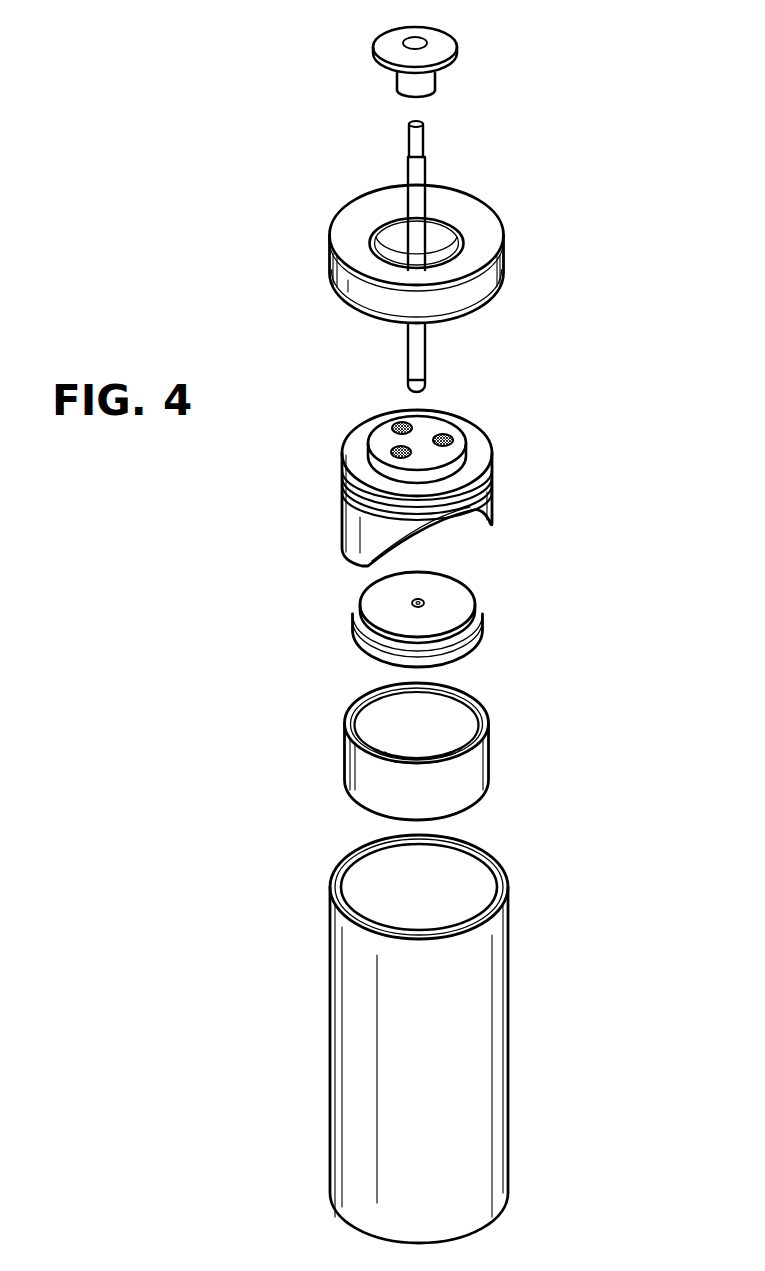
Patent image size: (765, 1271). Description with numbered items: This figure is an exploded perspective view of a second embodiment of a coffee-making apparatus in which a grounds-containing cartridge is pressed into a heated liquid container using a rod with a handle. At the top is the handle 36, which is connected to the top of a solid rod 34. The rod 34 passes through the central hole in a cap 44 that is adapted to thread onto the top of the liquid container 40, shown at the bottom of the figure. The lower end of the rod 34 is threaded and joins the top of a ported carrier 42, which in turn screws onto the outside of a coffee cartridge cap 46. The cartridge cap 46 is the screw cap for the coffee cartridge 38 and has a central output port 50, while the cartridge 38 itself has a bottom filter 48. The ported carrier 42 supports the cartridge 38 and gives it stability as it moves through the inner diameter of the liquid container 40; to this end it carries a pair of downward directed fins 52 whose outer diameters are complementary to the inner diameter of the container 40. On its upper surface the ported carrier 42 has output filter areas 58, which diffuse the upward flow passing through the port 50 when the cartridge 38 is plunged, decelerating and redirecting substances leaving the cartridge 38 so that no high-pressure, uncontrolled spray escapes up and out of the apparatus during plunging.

The solid rod 34 is at (425, 163).
The handle 36 is at (458, 47).
The cartridge 38 is at (439, 739).
The liquid container 40 is at (508, 918).
The ported carrier 42 is at (448, 481).
The cap 44 is at (503, 262).
The coffee cartridge cap 46 is at (469, 612).
The bottom filter 48 is at (418, 760).
The central output port 50 is at (418, 598).
The downward directed fins 52 is at (493, 496).
The output filter areas 58 is at (413, 427).